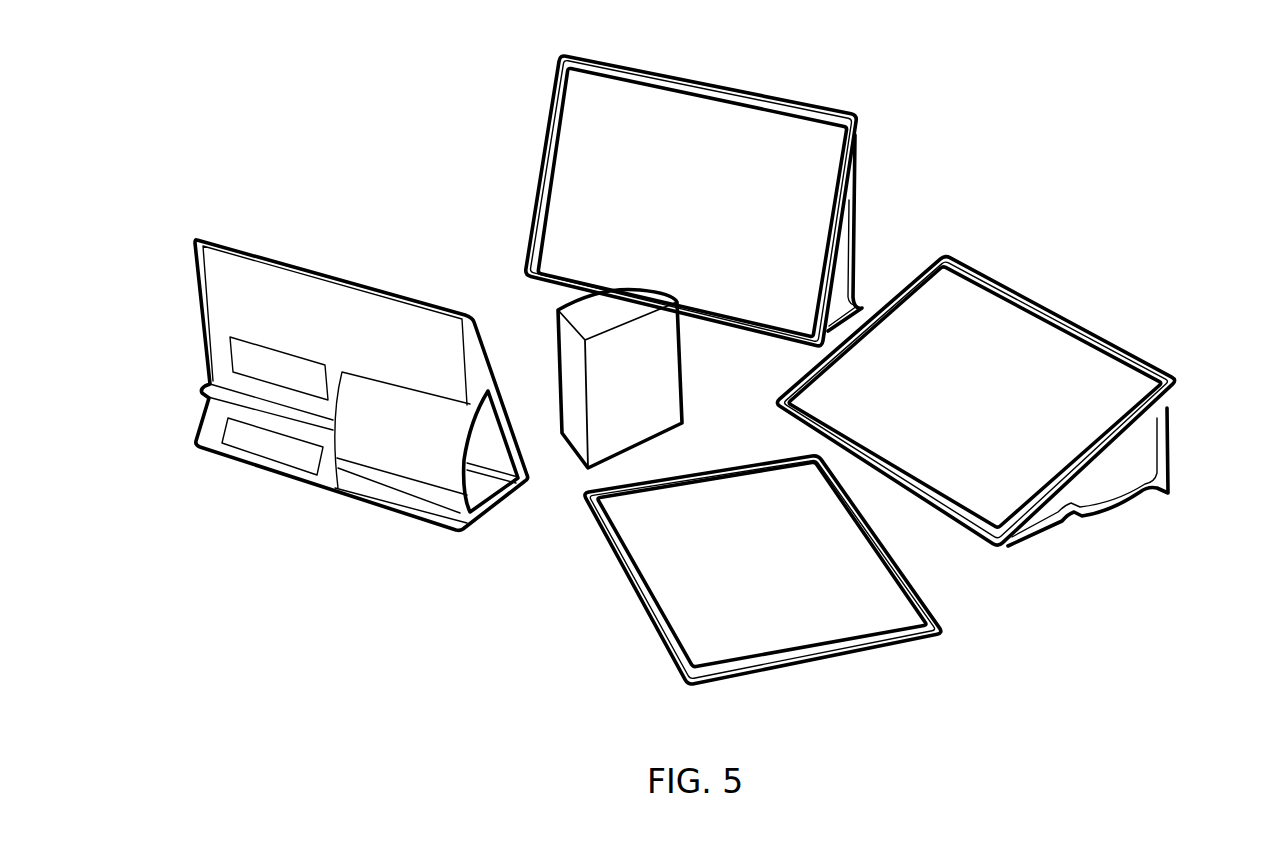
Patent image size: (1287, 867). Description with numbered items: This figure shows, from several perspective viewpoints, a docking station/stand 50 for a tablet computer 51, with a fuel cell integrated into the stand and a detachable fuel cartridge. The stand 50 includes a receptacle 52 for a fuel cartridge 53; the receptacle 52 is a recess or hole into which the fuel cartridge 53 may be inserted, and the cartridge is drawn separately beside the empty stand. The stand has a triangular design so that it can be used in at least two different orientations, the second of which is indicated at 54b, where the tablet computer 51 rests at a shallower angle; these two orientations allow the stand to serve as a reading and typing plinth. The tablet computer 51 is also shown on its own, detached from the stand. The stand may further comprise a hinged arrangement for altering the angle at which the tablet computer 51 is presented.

The docking station/stand 50 is at (184, 152).
The tablet computer 51 is at (913, 638).
The receptacle 52 is at (334, 399).
The fuel cartridge 53 is at (660, 362).
The second orientation of use 54b is at (1167, 410).